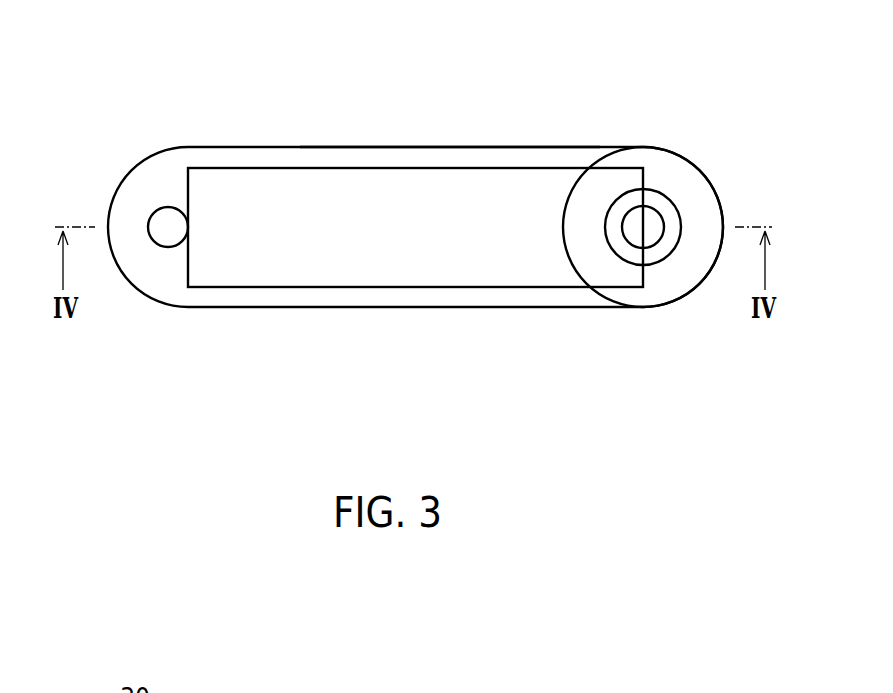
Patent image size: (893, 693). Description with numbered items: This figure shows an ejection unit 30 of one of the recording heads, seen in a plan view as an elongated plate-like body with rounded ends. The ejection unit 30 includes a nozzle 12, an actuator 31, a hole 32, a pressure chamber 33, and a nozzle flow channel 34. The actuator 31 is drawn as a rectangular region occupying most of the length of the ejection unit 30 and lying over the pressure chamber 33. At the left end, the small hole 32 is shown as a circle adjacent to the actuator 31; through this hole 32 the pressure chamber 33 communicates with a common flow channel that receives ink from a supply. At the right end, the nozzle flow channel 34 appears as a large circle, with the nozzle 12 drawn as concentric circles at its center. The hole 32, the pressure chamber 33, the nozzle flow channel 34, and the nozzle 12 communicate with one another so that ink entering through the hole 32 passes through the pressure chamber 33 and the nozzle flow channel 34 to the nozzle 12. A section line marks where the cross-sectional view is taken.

The ejection unit 30 is at (608, 89).
The actuator 31 is at (295, 168).
The hole 32 is at (168, 235).
The pressure chamber 33 is at (472, 147).
The nozzle flow channel 34 is at (570, 197).
The nozzle 12 is at (650, 233).